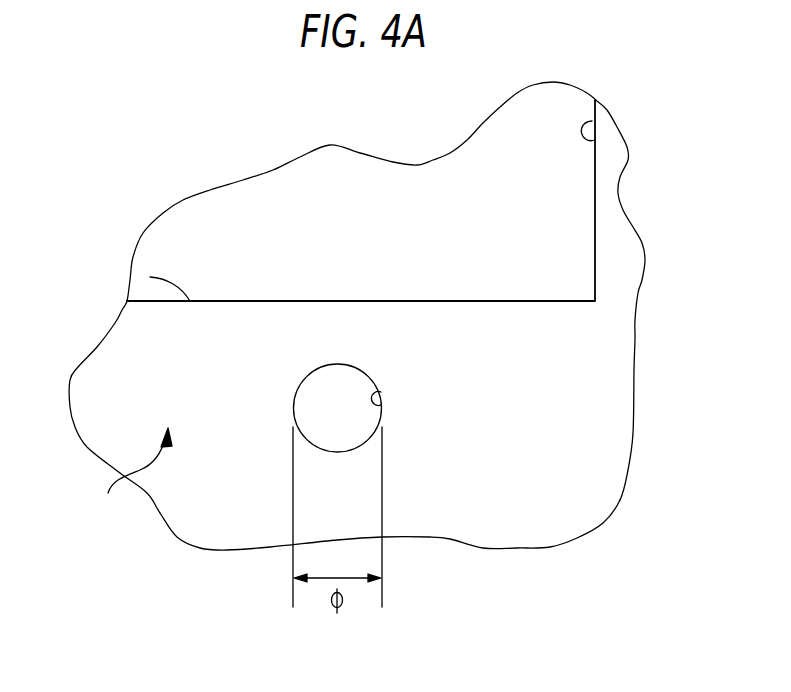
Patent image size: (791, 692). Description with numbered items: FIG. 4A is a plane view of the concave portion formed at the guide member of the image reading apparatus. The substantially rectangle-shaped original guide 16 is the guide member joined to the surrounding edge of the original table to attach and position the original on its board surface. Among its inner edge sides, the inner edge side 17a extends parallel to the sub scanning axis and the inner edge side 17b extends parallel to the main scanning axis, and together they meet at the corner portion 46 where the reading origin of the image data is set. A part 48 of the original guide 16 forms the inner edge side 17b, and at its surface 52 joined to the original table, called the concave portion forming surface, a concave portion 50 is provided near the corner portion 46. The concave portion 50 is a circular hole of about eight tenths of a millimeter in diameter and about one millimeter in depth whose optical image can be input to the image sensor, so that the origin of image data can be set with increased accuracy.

The original guide 16 is at (615, 370).
The inner edge side 17a is at (592, 121).
The inner edge side 17b is at (150, 277).
The corner portion 46 is at (562, 244).
The part forming the inner edge side 48 is at (230, 528).
The concave portion 50 is at (381, 392).
The concave portion forming surface 52 is at (134, 476).